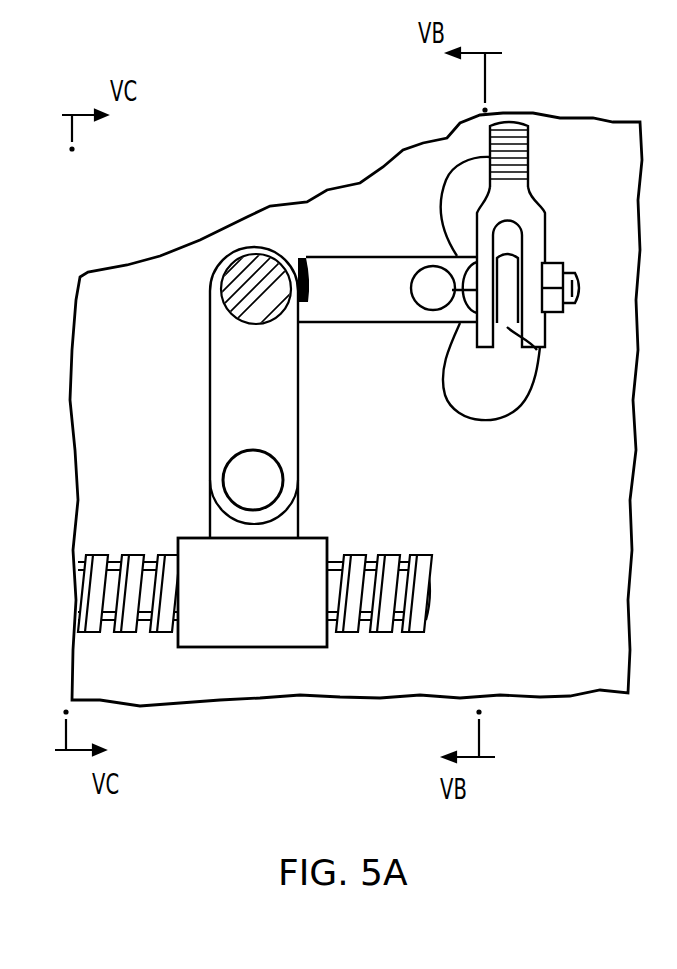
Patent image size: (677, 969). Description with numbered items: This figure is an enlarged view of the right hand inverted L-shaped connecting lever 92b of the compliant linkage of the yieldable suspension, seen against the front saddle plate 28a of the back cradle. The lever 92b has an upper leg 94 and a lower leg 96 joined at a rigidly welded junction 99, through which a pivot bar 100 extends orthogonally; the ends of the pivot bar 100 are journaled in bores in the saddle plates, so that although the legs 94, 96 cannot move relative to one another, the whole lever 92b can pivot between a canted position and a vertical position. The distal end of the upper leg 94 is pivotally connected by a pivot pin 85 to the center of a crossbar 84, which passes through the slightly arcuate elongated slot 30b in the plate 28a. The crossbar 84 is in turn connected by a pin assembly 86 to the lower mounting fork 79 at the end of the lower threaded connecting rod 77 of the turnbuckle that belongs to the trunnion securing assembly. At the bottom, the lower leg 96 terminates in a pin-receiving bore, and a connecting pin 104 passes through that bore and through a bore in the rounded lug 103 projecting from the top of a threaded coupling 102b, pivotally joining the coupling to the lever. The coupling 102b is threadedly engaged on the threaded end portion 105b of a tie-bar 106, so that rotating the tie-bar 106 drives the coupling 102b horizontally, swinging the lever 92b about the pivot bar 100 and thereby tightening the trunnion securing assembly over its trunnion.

The front saddle plate 28a is at (547, 475).
The elongated slot 30b is at (445, 188).
The lower threaded connecting rod 77 is at (530, 143).
The lower mounting fork 79 is at (513, 210).
The crossbar 84 is at (532, 362).
The pivot pin 85 is at (428, 283).
The pin assembly 86 is at (455, 291).
The inverted L-shaped connecting lever 92b is at (186, 299).
The upper leg 94 is at (371, 303).
The lower leg 96 is at (270, 411).
The rigidly welded junction 99 is at (306, 318).
The pivot bar 100 is at (254, 282).
The threaded coupling 102b is at (255, 633).
The rounded lug 103 is at (300, 525).
The connecting pin 104 is at (252, 458).
The threaded end portion 105b is at (377, 588).
The tie-bar 106 is at (135, 545).